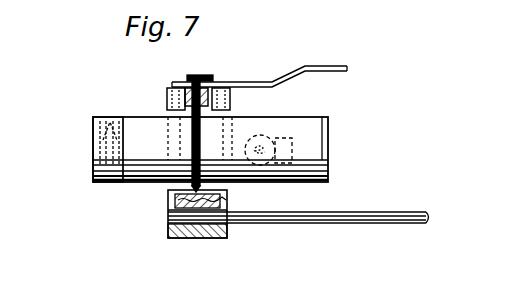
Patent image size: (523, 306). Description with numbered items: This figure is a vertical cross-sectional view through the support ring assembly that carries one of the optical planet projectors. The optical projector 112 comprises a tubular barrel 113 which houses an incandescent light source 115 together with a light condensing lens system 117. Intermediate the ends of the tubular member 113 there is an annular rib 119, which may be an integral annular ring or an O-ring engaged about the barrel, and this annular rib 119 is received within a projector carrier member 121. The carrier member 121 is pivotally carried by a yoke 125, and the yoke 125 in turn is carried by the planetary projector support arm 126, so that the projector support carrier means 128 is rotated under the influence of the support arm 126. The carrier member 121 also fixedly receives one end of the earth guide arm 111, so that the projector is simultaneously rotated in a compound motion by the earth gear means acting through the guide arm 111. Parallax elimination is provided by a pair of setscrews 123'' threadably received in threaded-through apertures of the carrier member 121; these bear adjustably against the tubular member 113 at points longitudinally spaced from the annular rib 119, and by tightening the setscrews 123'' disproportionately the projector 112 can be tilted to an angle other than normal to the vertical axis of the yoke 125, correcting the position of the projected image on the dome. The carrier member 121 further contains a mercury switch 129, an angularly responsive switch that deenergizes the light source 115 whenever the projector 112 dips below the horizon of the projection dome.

The earth guide arm 111 is at (301, 228).
The optical projector 112 is at (334, 142).
The tubular barrel 113 is at (328, 180).
The incandescent light source 115 is at (275, 131).
The light condensing lens system 117 is at (90, 153).
The annular rib 119 is at (192, 154).
The projector carrier member 121 is at (170, 230).
The setscrews 123'' is at (190, 99).
The yoke 125 is at (190, 82).
The planetary projector support arm 126 is at (290, 75).
The projector support carrier means 128 is at (150, 209).
The mercury switch 129 is at (168, 195).